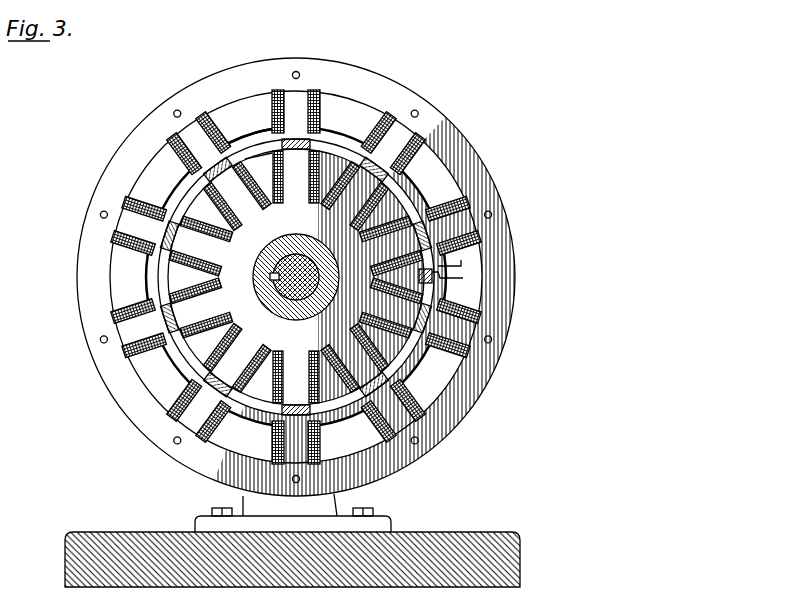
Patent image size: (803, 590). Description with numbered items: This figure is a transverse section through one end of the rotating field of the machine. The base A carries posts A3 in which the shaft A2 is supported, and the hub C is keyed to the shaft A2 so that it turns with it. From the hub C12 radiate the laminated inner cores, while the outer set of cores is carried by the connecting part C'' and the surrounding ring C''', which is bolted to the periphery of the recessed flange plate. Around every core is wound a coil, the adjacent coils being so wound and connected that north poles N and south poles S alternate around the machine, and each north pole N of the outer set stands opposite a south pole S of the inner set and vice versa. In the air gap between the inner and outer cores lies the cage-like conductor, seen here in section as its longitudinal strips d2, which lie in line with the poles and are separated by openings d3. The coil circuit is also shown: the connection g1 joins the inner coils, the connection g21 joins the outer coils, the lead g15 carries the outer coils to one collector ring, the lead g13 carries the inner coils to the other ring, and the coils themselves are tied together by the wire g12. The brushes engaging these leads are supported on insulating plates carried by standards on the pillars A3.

The outer frame ring C''' is at (296, 277).
The connecting part C'' is at (304, 286).
The hub C is at (287, 277).
The hub C12 is at (278, 340).
The base A is at (452, 535).
The shaft A2 is at (292, 268).
The post A3 is at (342, 501).
The strip d2 is at (257, 407).
The opening d3 is at (246, 399).
The connection g1 is at (264, 159).
The wire g12 is at (413, 279).
The lead g13 is at (458, 281).
The lead g15 is at (453, 256).
The connection g21 is at (255, 127).
The north pole N is at (296, 266).
The south pole S is at (296, 288).